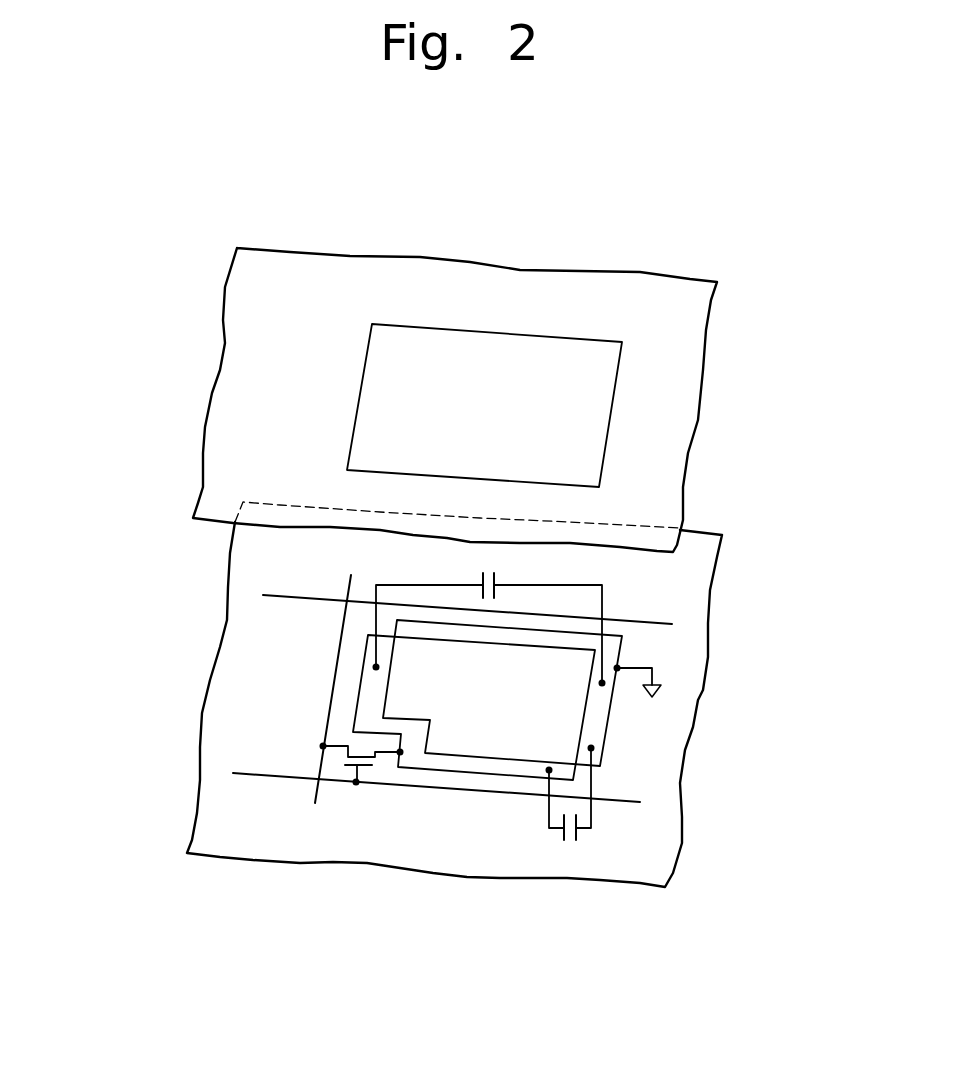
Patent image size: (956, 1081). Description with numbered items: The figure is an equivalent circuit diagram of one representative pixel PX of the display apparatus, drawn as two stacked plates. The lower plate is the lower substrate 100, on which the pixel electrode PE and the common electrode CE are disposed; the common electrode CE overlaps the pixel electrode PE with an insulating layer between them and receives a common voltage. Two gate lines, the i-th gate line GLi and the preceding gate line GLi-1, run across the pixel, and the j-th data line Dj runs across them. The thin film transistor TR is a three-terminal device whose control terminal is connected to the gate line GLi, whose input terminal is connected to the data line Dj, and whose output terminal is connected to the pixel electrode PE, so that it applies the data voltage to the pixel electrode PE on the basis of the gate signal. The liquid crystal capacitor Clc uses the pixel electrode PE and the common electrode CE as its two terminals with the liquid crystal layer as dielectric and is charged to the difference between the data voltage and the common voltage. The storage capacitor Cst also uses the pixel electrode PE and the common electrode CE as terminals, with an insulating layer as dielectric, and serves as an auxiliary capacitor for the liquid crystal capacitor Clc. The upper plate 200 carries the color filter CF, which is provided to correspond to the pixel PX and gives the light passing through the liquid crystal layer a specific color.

The second (opposite) substrate 200 is at (505, 400).
The color filter CF is at (484, 350).
The lower substrate 100 is at (504, 694).
The pixel PX is at (354, 736).
The (i-1)th gate line GLi-1 is at (467, 594).
The i-th gate line GLi is at (436, 773).
The j-th data line Dj is at (340, 672).
The pixel electrode PE is at (474, 783).
The common electrode CE is at (522, 775).
The liquid crystal capacitor Clc is at (489, 615).
The storage capacitor Cst is at (570, 808).
The thin film transistor TR is at (362, 796).